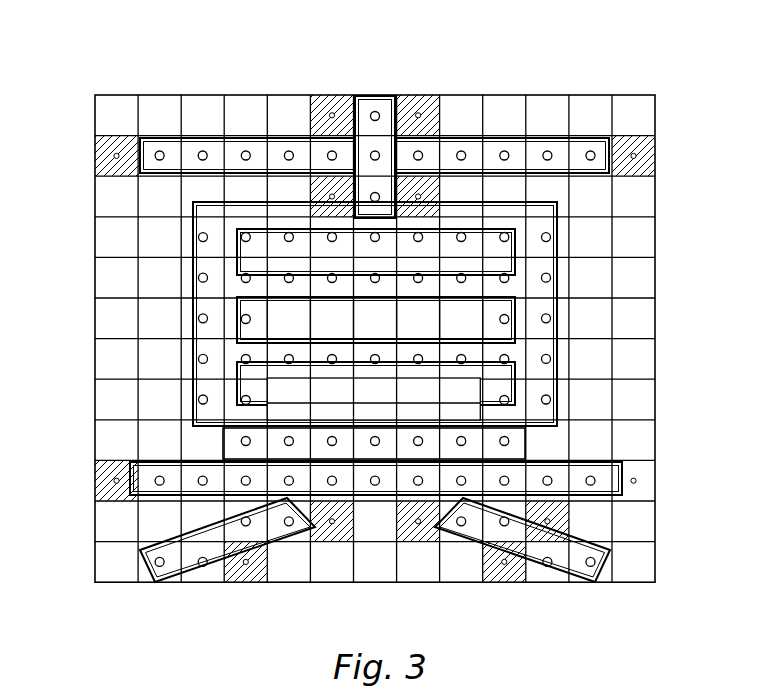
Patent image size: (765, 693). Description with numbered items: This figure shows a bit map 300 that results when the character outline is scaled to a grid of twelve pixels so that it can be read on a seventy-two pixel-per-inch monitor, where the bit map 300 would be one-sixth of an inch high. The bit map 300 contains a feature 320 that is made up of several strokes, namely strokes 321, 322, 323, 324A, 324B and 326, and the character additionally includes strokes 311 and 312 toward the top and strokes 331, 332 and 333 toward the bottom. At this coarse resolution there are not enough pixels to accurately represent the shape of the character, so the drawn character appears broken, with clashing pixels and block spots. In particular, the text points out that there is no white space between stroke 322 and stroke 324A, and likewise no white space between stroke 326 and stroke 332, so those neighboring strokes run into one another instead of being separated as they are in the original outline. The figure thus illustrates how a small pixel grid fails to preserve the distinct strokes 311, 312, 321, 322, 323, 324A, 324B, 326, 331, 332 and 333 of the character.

The bit map 300 is at (590, 67).
The stroke 311 is at (379, 96).
The stroke 312 is at (643, 136).
The feature 320 is at (120, 373).
The stroke 321 is at (181, 288).
The stroke 322 is at (381, 304).
The stroke 323 is at (566, 285).
The stroke 324A is at (297, 300).
The stroke 324B is at (402, 338).
The stroke 326 is at (538, 431).
The stroke 331 is at (137, 583).
The stroke 332 is at (626, 463).
The stroke 333 is at (608, 583).